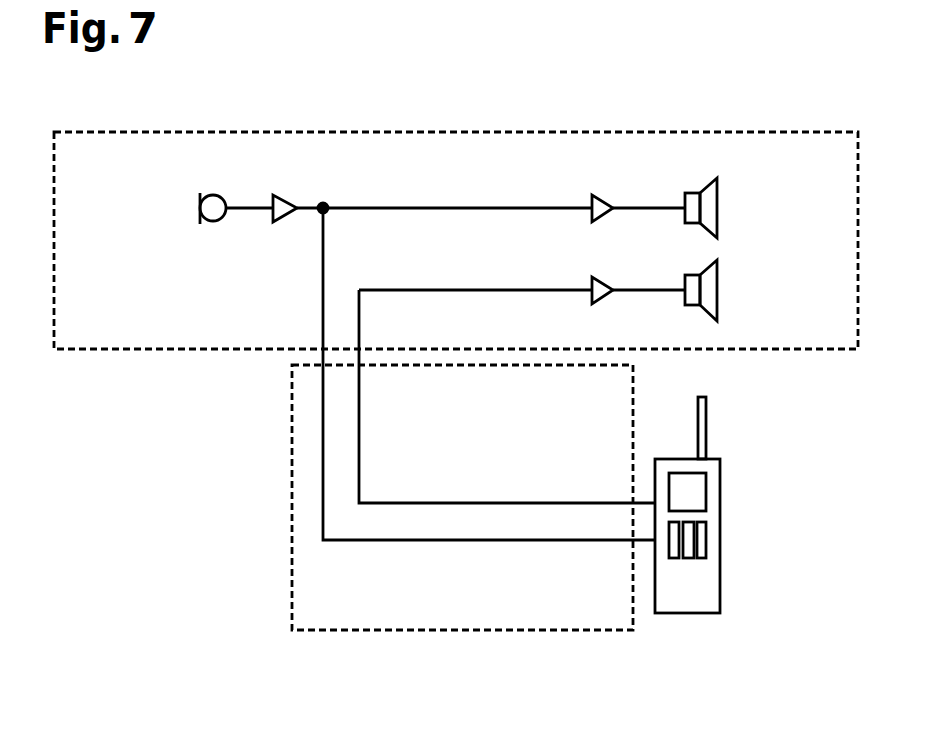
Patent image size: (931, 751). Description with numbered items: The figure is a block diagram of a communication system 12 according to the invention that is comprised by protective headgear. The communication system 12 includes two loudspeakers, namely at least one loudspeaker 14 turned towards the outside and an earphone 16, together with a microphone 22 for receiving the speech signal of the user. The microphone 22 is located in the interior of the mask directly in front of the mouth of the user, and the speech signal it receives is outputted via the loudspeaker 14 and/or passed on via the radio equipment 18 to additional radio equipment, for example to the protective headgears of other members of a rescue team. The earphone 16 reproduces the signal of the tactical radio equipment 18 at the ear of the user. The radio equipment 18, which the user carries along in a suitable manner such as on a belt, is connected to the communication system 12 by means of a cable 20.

The communication system 12 is at (568, 130).
The loudspeaker 14 is at (718, 208).
The earphone 16 is at (718, 290).
The radio equipment 18 is at (722, 524).
The cable 20 is at (290, 497).
The microphone 22 is at (197, 208).